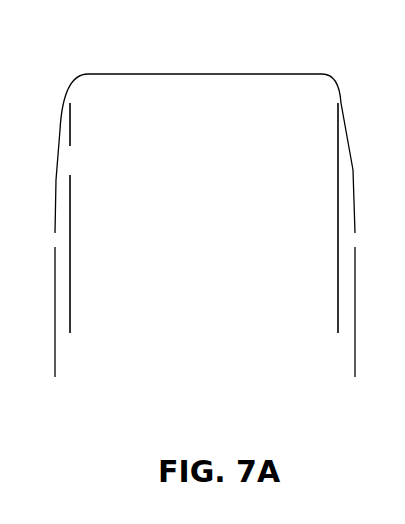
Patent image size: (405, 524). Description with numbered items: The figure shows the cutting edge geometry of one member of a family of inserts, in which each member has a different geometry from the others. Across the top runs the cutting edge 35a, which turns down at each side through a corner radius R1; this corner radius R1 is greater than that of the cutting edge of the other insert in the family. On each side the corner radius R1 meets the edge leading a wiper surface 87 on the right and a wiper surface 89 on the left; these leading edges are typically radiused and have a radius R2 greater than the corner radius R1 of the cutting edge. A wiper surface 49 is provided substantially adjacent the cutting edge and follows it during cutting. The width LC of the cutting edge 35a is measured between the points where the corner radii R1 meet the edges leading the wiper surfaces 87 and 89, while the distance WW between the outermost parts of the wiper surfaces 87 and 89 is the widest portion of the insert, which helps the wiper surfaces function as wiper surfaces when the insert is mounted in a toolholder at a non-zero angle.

The cutting edge 35a is at (237, 71).
The wiper surface 49 is at (53, 124).
The wiper surface 89 is at (57, 161).
The wiper surface 87 is at (353, 160).
The corner radius R1 is at (90, 83).
The radius R2 is at (66, 163).
The width of the cutting edge LC is at (330, 291).
The distance between outermost parts of the wiper surfaces WW is at (347, 360).